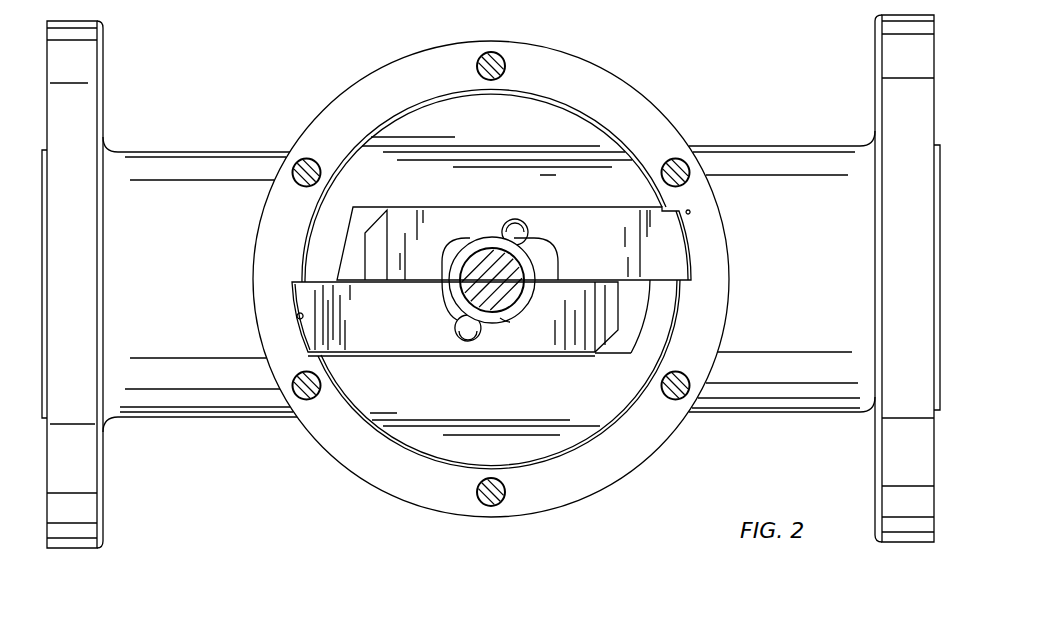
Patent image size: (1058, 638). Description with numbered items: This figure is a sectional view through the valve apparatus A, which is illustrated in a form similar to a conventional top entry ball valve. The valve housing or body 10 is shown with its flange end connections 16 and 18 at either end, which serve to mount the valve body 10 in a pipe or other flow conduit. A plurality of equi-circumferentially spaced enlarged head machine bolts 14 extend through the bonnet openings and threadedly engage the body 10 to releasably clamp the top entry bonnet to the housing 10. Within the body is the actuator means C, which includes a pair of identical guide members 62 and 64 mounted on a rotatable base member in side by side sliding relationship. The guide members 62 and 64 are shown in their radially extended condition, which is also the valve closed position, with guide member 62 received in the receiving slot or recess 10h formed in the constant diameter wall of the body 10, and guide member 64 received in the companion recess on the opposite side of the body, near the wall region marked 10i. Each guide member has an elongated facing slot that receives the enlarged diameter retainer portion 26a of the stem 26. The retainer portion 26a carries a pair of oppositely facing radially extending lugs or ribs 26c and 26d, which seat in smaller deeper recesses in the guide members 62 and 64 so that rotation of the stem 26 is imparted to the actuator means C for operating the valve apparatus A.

The valve housing or body 10 is at (200, 160).
The receiving slot or recess 10h is at (300, 313).
The valve body port portion 10i is at (690, 215).
The enlarged head machine bolts 14 is at (492, 52).
The flange end connection 16 is at (88, 97).
The flange end connection 18 is at (886, 68).
The stem 26 is at (517, 275).
The enlarged diameter portion 26a is at (507, 318).
The lug or rib 26c is at (463, 332).
The lug or rib 26d is at (515, 224).
The guide member 62 is at (350, 337).
The guide member 64 is at (620, 220).
The actuator means C is at (336, 72).
The valve apparatus A is at (212, 447).